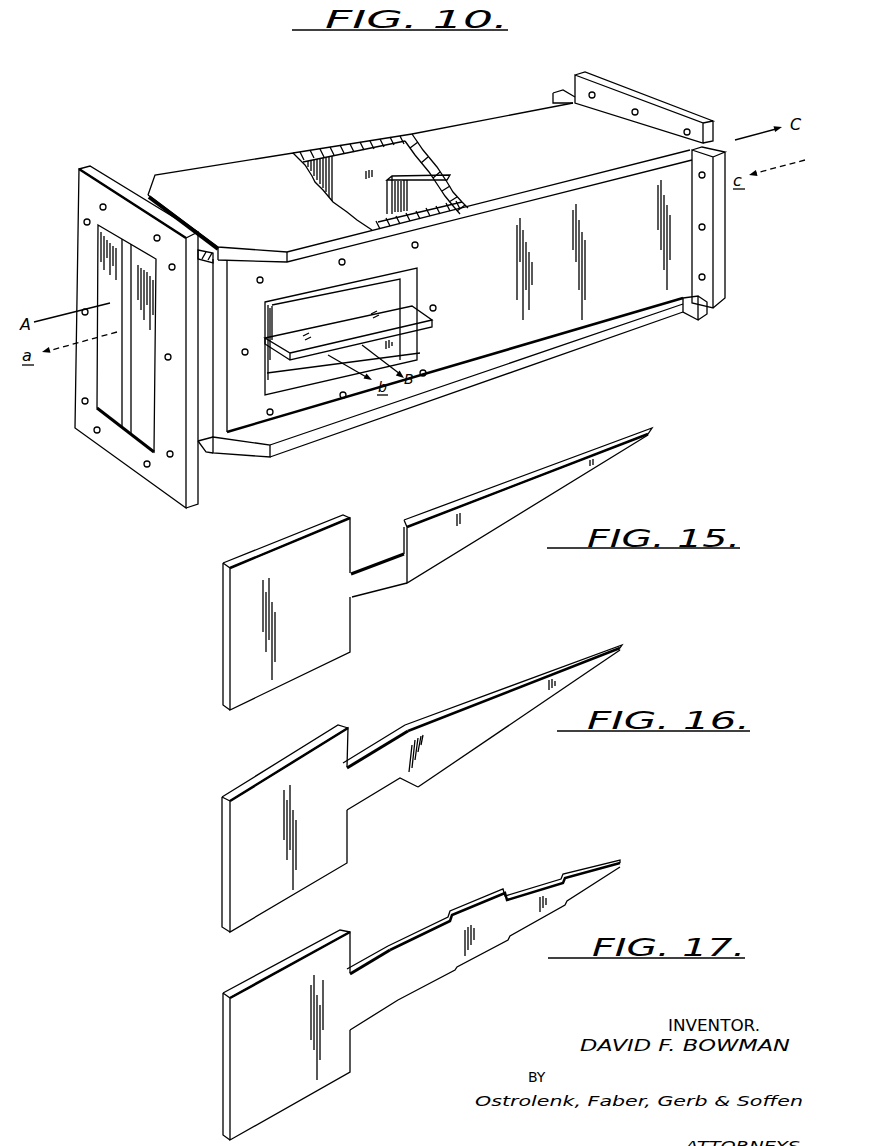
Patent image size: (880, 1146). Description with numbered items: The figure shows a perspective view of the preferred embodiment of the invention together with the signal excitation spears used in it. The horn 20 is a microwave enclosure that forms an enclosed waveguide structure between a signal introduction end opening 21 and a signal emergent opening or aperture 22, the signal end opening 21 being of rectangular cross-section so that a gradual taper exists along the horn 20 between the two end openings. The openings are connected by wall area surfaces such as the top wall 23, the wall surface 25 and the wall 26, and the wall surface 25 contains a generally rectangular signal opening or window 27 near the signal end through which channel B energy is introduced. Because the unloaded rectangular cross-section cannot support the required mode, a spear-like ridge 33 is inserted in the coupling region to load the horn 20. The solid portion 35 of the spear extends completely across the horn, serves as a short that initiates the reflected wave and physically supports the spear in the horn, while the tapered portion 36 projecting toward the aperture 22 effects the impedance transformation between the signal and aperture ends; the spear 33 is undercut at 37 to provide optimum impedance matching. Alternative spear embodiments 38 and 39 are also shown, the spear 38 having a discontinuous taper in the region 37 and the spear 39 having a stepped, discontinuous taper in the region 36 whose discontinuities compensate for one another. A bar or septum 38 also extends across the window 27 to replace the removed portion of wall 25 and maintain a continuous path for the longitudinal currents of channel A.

In FIG. 10, the horn 20 is at (318, 143).
In FIG. 10, the signal introduction end opening 21 is at (103, 373).
In FIG. 10, the signal emergent opening (horn aperture) 22 is at (668, 99).
In FIG. 10, the wall area surface 23 is at (531, 167).
In FIG. 10, the wall surface 25 is at (627, 271).
In FIG. 10, the wall area surface 26 is at (109, 283).
In FIG. 10, the signal opening (window) 27 is at (398, 342).
In FIG. 10, the spear-like ridge 33 is at (125, 425).
In FIG. 15, the spear-like ridge 33 is at (419, 569).
In FIG. 10, the solid shorting portion of the spear 35 is at (388, 195).
In FIG. 15, the solid shorting portion of the spear 35 is at (238, 617).
In FIG. 16, the solid shorting portion of the spear 35 is at (242, 838).
In FIG. 17, the solid shorting portion of the spear 35 is at (242, 1030).
In FIG. 15, the tapered portion of the spear 36 is at (515, 498).
In FIG. 16, the tapered portion of the spear 36 is at (512, 700).
In FIG. 17, the tapered portion of the spear 36 is at (488, 920).
In FIG. 15, the undercut region 37 is at (373, 558).
In FIG. 16, the undercut region 37 is at (378, 758).
In FIG. 17, the undercut region 37 is at (363, 983).
In FIG. 10, the alternative spear (septum) 38 is at (421, 310).
In FIG. 16, the alternative spear (septum) 38 is at (406, 787).
In FIG. 17, the alternative spear with stepped taper 39 is at (406, 1000).